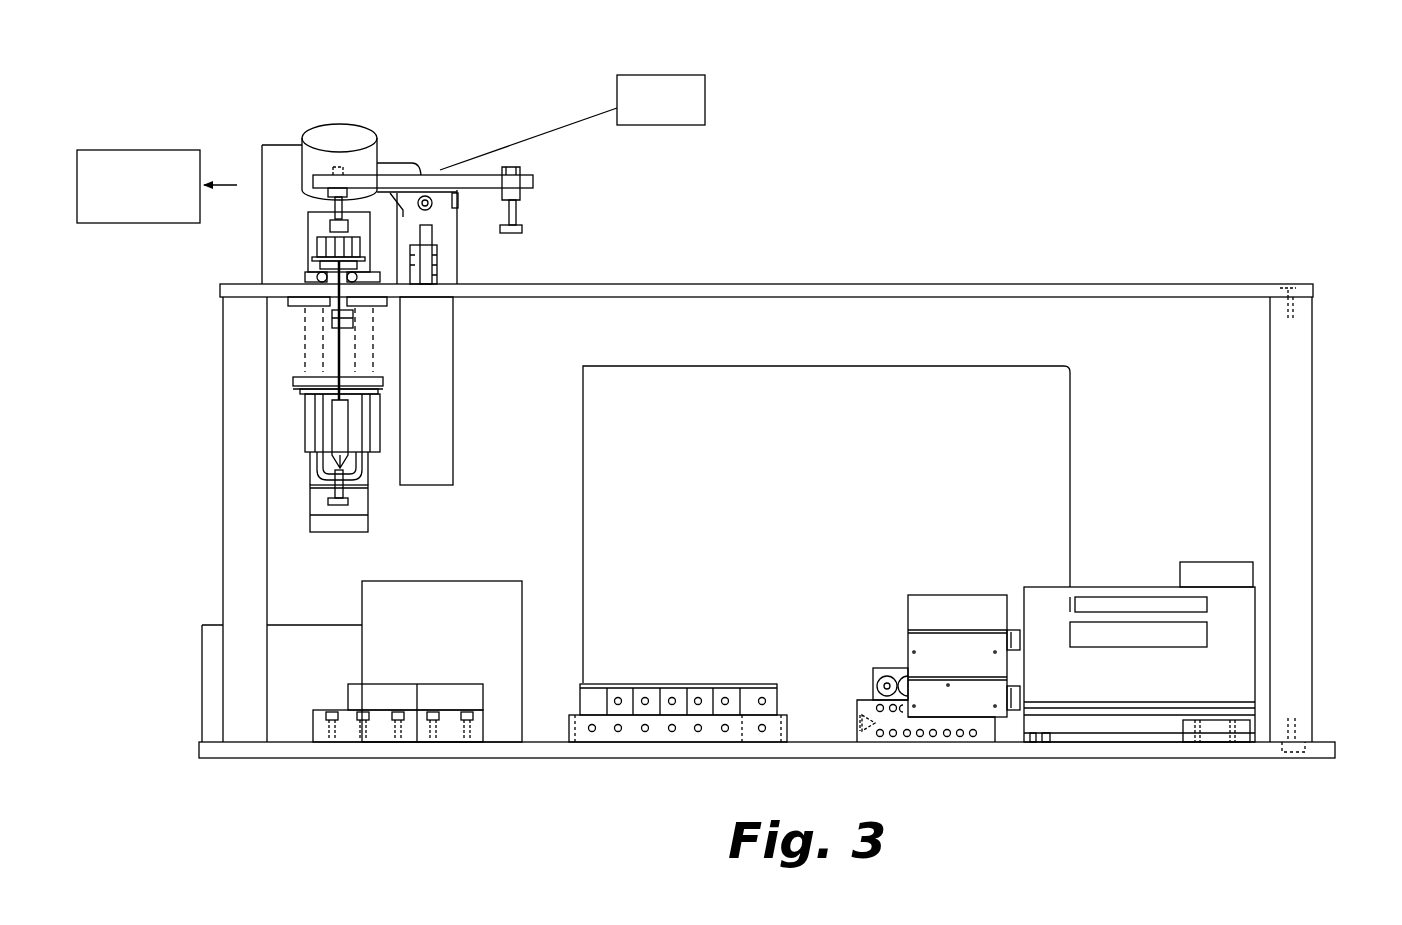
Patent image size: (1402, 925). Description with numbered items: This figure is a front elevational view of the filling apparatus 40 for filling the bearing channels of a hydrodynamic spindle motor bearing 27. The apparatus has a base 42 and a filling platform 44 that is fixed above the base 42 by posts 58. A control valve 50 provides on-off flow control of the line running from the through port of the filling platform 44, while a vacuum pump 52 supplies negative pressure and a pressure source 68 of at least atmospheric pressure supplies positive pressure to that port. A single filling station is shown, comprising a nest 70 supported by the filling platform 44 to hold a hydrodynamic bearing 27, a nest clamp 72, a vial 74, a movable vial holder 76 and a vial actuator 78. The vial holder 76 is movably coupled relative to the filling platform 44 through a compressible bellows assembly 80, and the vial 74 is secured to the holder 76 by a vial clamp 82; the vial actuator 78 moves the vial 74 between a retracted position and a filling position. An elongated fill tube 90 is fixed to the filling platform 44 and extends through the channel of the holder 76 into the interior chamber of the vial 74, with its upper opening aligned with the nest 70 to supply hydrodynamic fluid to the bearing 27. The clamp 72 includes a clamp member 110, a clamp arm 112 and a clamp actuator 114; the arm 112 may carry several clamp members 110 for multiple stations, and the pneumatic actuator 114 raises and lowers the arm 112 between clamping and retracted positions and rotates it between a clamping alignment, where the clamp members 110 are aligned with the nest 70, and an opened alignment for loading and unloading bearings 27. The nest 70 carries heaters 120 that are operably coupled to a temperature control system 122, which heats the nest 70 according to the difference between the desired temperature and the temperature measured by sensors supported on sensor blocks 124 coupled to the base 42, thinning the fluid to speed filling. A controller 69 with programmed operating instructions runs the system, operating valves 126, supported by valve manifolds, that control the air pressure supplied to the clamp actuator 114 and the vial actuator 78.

The bearing 27 is at (317, 248).
The filling apparatus 40 is at (992, 213).
The base 42 is at (322, 748).
The filling platform 44 is at (658, 283).
The control valve 50 is at (333, 128).
The vacuum pump 52 is at (130, 150).
The posts 58 is at (220, 474).
The pressure source 68 is at (705, 98).
The controller 69 is at (1092, 584).
The nest 70 is at (305, 272).
The nest clamp 72 is at (442, 170).
The vial 74 is at (305, 462).
The movable vial holder 76 is at (293, 381).
The vial actuator 78 is at (372, 512).
The compressible bellows assembly 80 is at (305, 344).
The vial clamp 82 is at (340, 506).
The fill tube 90 is at (362, 322).
The clamp member 110 is at (322, 222).
The clamp arm 112 is at (492, 172).
The clamp actuator 114 is at (457, 386).
The heaters 120 is at (438, 290).
The temperature control system 122 is at (1074, 420).
The sensor blocks 124 is at (442, 679).
The valves 126 is at (738, 672).